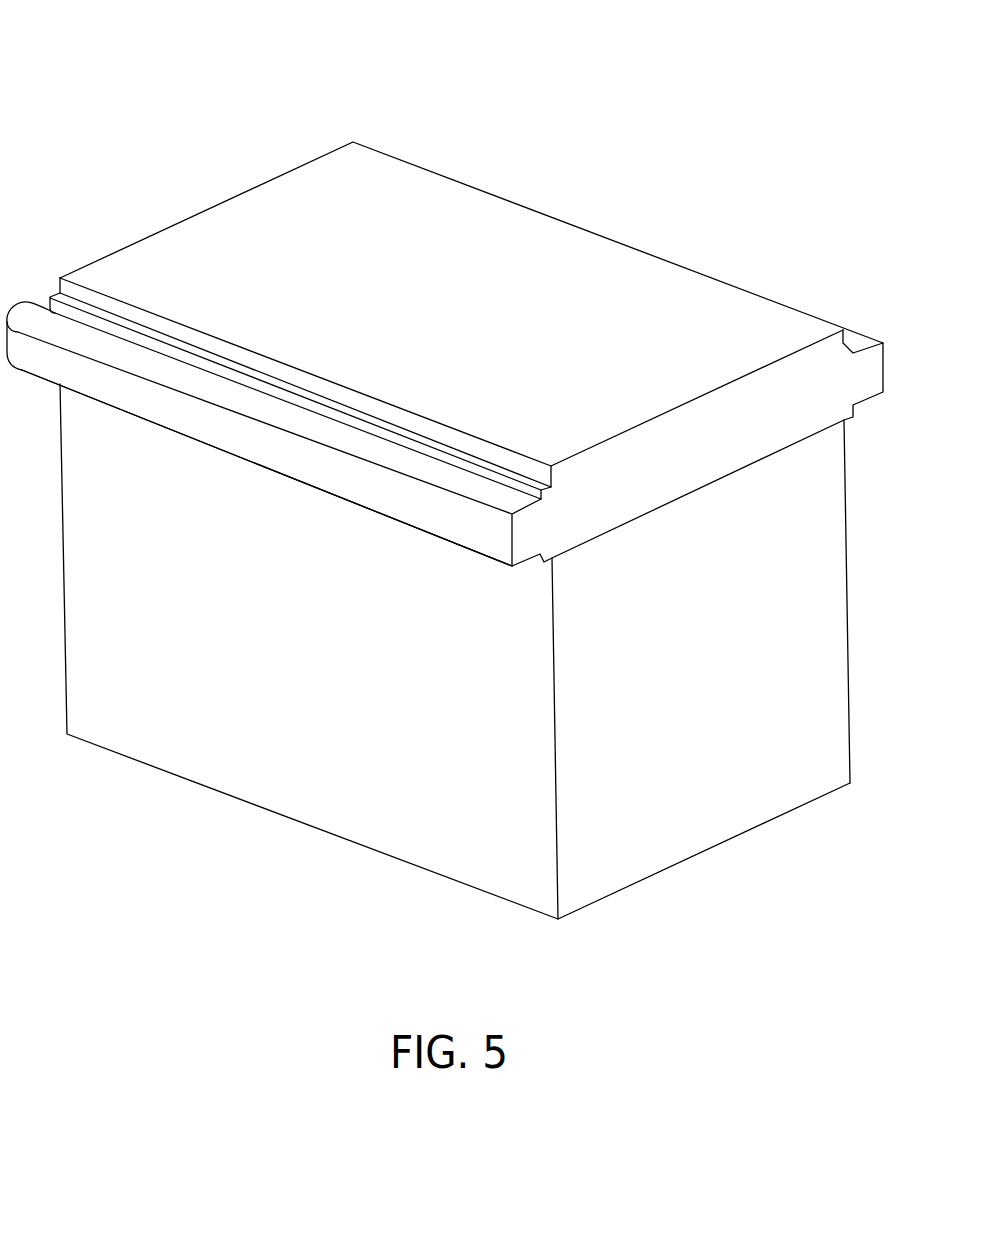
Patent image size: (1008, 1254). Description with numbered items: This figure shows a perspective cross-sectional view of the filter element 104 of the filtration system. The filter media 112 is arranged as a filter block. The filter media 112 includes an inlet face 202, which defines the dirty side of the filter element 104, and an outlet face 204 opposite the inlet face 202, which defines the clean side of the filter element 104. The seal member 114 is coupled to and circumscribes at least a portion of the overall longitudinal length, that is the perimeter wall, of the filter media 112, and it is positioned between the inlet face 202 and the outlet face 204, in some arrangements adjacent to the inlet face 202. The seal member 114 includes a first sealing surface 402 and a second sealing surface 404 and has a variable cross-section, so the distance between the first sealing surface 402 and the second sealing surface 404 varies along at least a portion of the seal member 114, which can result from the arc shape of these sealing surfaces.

The filter element 104 is at (158, 97).
The filter media 112 is at (795, 737).
The seal member 114 is at (28, 313).
The inlet face 202 is at (537, 252).
The outlet face 204 is at (678, 862).
The first sealing surface 402 is at (383, 452).
The second sealing surface 404 is at (337, 497).